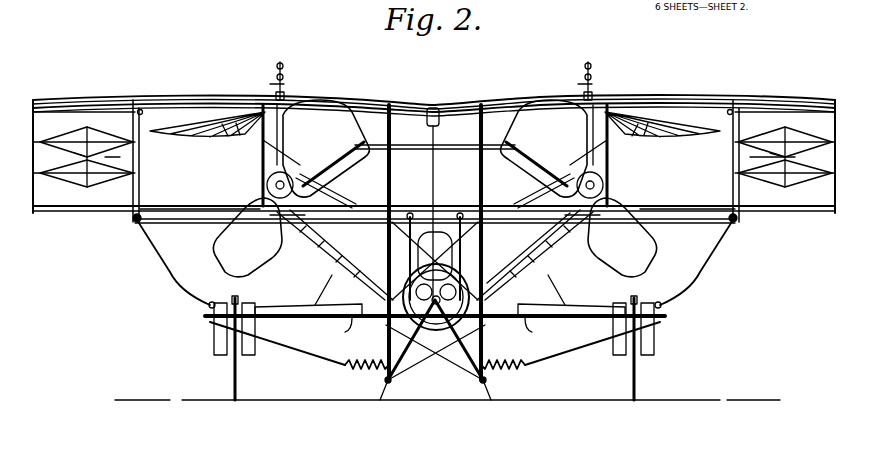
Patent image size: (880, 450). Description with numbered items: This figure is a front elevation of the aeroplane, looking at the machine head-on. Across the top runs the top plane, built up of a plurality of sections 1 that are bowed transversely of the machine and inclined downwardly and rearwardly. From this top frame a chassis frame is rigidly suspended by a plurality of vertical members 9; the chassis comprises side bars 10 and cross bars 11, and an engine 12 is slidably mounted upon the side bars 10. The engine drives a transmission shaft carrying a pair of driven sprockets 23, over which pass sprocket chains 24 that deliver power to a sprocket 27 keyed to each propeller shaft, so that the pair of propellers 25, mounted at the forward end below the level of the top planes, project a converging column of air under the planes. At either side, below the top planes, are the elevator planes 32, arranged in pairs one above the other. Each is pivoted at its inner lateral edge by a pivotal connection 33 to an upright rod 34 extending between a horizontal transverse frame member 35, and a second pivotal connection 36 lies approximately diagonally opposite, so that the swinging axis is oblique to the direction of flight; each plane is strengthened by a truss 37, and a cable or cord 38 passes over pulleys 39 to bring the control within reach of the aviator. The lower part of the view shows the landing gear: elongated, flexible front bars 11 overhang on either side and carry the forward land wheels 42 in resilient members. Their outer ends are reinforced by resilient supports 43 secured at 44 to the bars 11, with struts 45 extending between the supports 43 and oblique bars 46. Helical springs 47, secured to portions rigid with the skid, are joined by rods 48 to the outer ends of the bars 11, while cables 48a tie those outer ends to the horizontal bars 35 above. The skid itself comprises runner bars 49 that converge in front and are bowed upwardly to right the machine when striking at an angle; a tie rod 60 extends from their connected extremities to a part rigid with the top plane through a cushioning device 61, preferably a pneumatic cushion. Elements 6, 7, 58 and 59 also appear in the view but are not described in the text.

The sections 1 is at (435, 137).
The indicator post 6 is at (283, 66).
The indicator arm 7 is at (270, 84).
The vertical members 9 is at (275, 135).
The side bars 10 is at (384, 332).
The front bars 11 is at (284, 314).
The engine 12 is at (440, 242).
The driven sprockets 23 is at (528, 248).
The sprocket chains 24 is at (335, 198).
The propellers 25 is at (434, 188).
The sprocket 27 is at (340, 162).
The elevator planes 32 is at (434, 157).
The pivotal connection 33 is at (137, 147).
The upright rod 34 is at (140, 186).
The horizontal transverse frame member 35 is at (200, 208).
The second pivotal connection 36 is at (678, 236).
The truss 37 is at (414, 157).
The cable or cord 38 is at (114, 157).
The pulleys 39 is at (142, 114).
The forward land wheels 42 is at (232, 383).
The resilient supports 43 is at (300, 305).
The securing point 44 is at (443, 330).
The struts 45 is at (440, 283).
The oblique bars 46 is at (320, 268).
The helical springs 47 is at (355, 372).
The rods 48 is at (306, 352).
The cables 48a is at (718, 268).
The runner bars 49 is at (389, 384).
The wing 58 is at (78, 100).
The engine rod 59 is at (405, 215).
The tie rod 60 is at (448, 215).
The cushioning device 61 is at (440, 118).